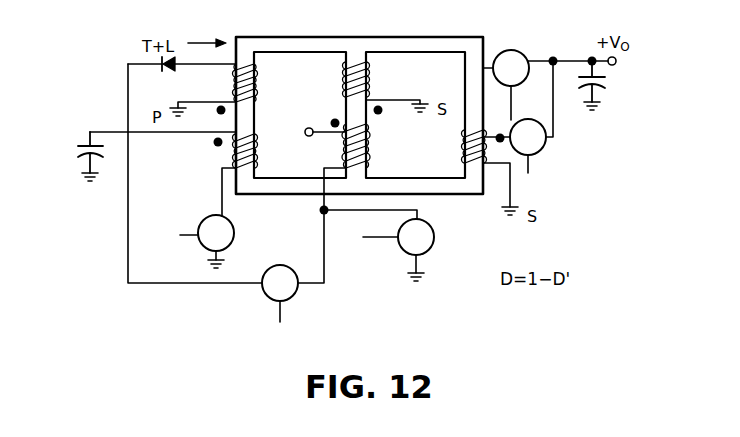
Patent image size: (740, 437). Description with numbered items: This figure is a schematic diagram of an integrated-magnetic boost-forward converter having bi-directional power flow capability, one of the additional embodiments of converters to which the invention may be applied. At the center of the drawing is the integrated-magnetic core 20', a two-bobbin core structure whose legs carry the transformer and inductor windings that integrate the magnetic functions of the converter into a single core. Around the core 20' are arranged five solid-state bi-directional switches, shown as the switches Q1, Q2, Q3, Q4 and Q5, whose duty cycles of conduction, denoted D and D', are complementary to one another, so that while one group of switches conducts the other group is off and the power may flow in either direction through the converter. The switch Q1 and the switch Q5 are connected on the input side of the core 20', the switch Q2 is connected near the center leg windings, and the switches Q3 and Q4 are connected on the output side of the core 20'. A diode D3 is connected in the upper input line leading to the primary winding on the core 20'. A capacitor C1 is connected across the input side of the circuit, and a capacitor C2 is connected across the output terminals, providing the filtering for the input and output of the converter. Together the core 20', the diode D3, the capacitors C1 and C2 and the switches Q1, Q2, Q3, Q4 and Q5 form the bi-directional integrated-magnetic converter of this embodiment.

The transformer core 20' is at (360, 99).
The diode D3 is at (182, 76).
The input capacitor C1 is at (150, 162).
The output capacitor C2 is at (599, 91).
The transistor switch Q1 is at (194, 219).
The transistor switch Q2 is at (385, 260).
The transistor switch Q3 is at (537, 85).
The transistor switch Q4 is at (526, 121).
The transistor switch Q5 is at (284, 304).